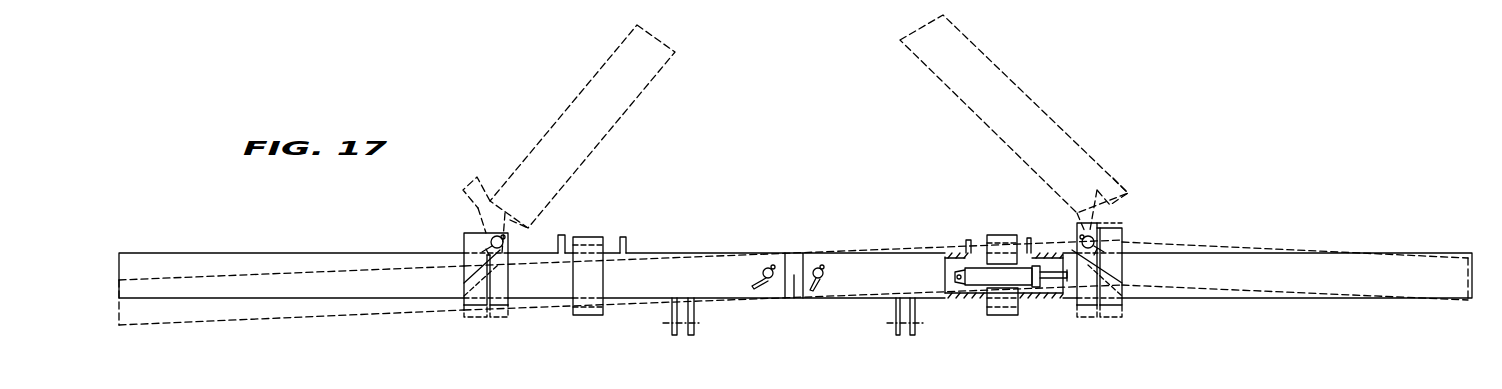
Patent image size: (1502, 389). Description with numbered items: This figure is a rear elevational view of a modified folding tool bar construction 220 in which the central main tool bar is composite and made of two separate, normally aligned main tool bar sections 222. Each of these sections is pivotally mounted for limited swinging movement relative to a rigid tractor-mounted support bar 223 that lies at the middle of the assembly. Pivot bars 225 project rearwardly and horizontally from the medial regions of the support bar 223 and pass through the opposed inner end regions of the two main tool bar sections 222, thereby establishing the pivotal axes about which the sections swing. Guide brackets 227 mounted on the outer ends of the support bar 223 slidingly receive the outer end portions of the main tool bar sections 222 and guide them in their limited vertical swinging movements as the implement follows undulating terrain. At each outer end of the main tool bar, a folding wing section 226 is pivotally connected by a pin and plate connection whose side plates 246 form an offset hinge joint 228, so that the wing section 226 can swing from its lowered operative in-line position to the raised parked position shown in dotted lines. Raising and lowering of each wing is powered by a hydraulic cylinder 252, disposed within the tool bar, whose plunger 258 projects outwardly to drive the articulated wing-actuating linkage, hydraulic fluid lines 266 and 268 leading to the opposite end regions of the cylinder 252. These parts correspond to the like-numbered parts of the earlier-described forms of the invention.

The folding tool bar construction 220 is at (840, 200).
The main tool bar sections 222 is at (647, 302).
The support bar 223 is at (791, 300).
The pivot bars 225 is at (833, 234).
The folding wing sections 226 is at (312, 253).
The guide brackets 227 is at (593, 237).
The offset hinge joint 228 is at (480, 228).
The side plates 246 is at (468, 243).
The hydraulic cylinder 252 is at (975, 290).
The plunger 258 is at (1067, 297).
The hydraulic fluid line 266 is at (628, 240).
The hydraulic fluid line 268 is at (556, 234).